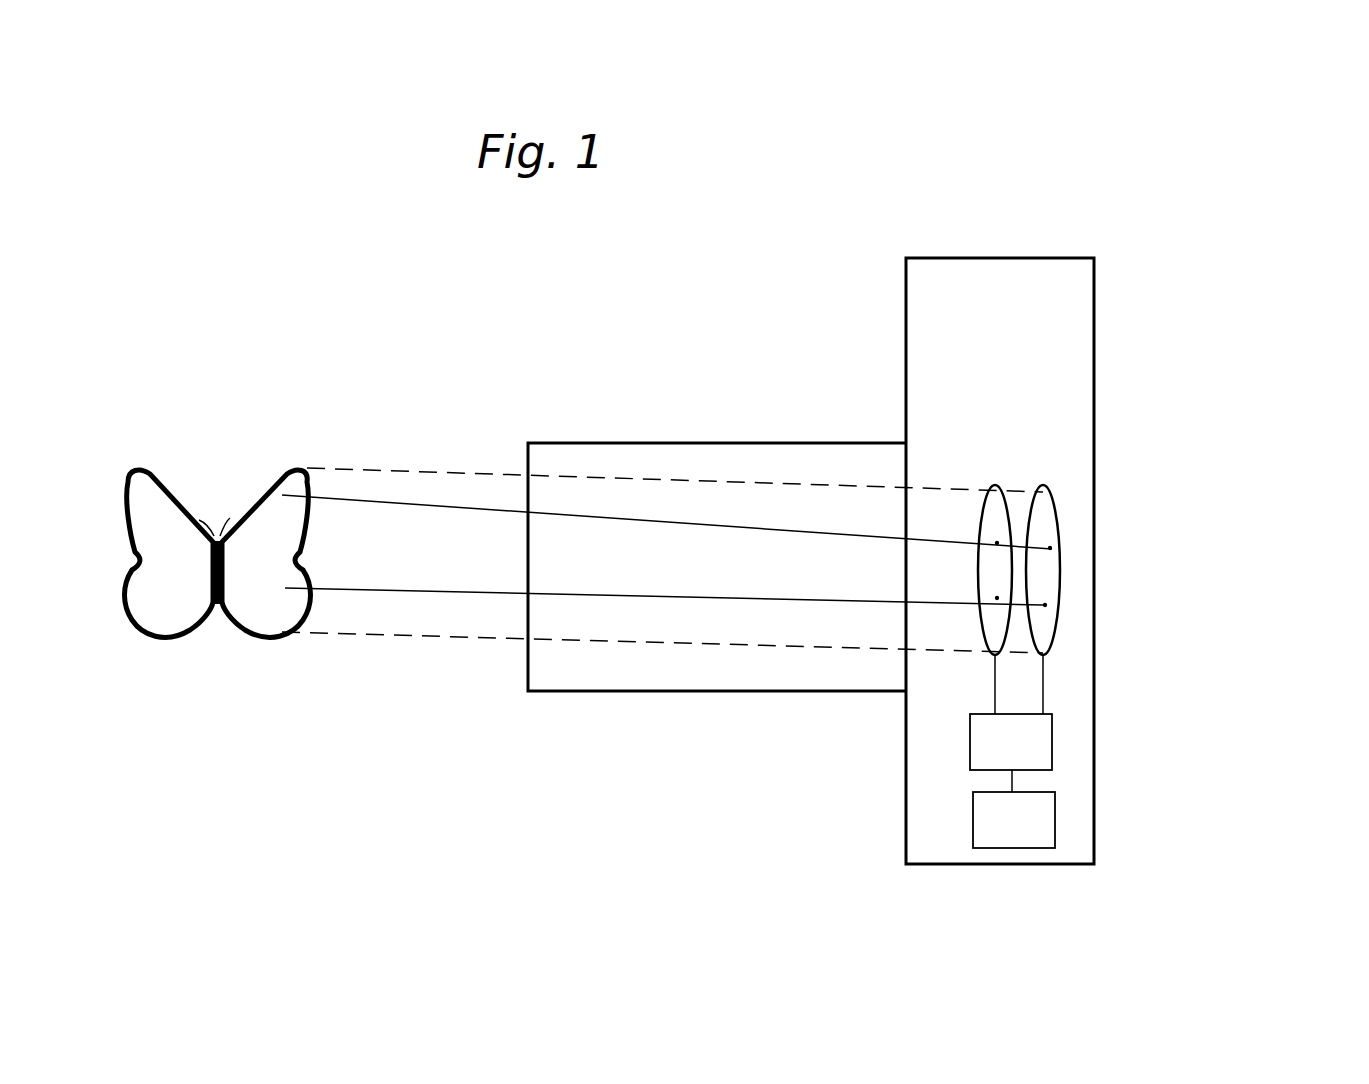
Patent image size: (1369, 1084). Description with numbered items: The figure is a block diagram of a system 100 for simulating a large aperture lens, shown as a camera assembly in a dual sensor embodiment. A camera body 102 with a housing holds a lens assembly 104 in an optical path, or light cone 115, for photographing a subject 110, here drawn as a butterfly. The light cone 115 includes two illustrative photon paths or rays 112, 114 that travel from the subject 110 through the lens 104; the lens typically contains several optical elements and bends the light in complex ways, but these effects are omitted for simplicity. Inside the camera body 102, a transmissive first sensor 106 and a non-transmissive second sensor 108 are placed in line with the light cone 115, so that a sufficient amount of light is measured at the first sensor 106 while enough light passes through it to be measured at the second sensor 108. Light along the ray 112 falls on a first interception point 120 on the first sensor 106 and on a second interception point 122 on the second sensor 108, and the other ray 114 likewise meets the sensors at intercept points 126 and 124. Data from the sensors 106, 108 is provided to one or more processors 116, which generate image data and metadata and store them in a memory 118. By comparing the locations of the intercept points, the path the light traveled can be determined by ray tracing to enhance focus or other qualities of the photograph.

The imaging system 100 is at (830, 168).
The camera body 102 is at (938, 258).
The lens assembly 104 is at (625, 691).
The first sensor 106 is at (995, 485).
The second sensor 108 is at (1053, 576).
The subject 110 is at (153, 488).
The ray 112 is at (413, 503).
The ray 114 is at (433, 592).
The light cone 115 is at (433, 477).
The processor 116 is at (970, 757).
The memory 118 is at (973, 825).
The first interception point 120 is at (997, 543).
The second interception point 122 is at (1050, 548).
The intercept point 124 is at (1045, 605).
The intercept point 126 is at (997, 598).